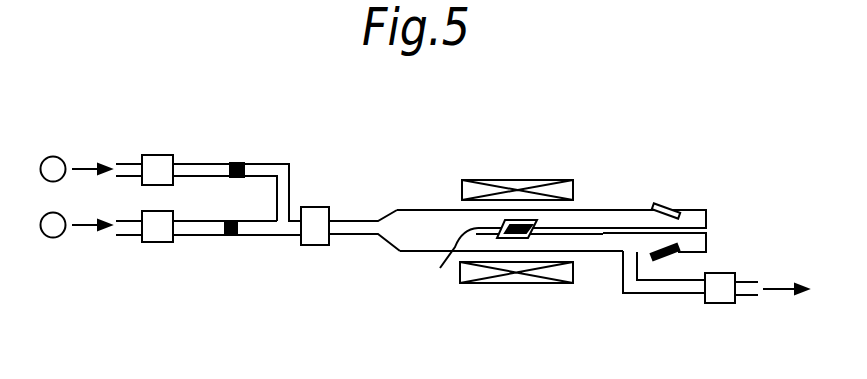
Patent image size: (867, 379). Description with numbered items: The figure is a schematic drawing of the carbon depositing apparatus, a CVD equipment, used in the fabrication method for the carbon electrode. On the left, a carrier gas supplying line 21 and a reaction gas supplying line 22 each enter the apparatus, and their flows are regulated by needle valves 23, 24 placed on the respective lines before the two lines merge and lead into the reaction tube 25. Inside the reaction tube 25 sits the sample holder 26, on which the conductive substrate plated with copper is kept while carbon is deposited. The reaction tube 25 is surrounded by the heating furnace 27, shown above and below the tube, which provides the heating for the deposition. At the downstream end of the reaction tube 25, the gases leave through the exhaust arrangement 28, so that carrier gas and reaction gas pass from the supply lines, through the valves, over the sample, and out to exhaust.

The carrier gas supplying line 21 is at (83, 163).
The reaction gas supplying line 22 is at (82, 229).
The needle valve 23 is at (237, 163).
The needle valve 24 is at (229, 236).
The reaction tube 25 is at (393, 207).
The sample holder 26 is at (440, 268).
The heating furnace 27 is at (517, 180).
The exhaust arrangement 28 is at (670, 294).